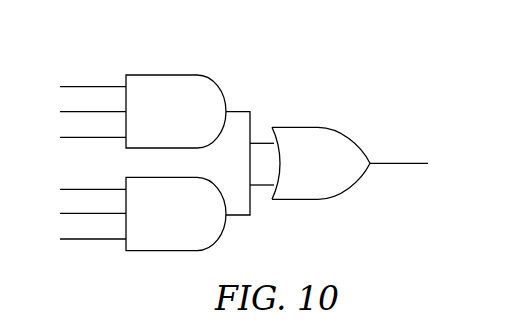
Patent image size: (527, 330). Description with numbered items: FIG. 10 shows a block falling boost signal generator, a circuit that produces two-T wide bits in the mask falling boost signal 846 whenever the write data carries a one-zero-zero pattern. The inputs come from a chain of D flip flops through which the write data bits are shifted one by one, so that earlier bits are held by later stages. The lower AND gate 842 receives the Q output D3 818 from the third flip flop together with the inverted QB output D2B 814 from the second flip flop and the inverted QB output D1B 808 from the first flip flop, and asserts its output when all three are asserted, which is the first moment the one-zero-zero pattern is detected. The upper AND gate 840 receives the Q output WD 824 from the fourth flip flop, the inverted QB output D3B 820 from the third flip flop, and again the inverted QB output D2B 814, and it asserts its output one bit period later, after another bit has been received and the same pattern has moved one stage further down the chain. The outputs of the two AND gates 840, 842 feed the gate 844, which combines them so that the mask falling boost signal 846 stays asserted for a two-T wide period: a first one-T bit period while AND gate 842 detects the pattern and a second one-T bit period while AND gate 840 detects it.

The inverted QB output D1B 808 is at (66, 239).
The inverted QB output D2B 814 is at (66, 137).
The Q output D3 818 is at (66, 189).
The inverted QB output D3B 820 is at (66, 112).
The Q output WD 824 is at (66, 87).
The AND gate 840 is at (157, 75).
The AND gate 842 is at (152, 252).
The XOR gate 844 is at (302, 125).
The mask falling boost signal 846 is at (385, 167).